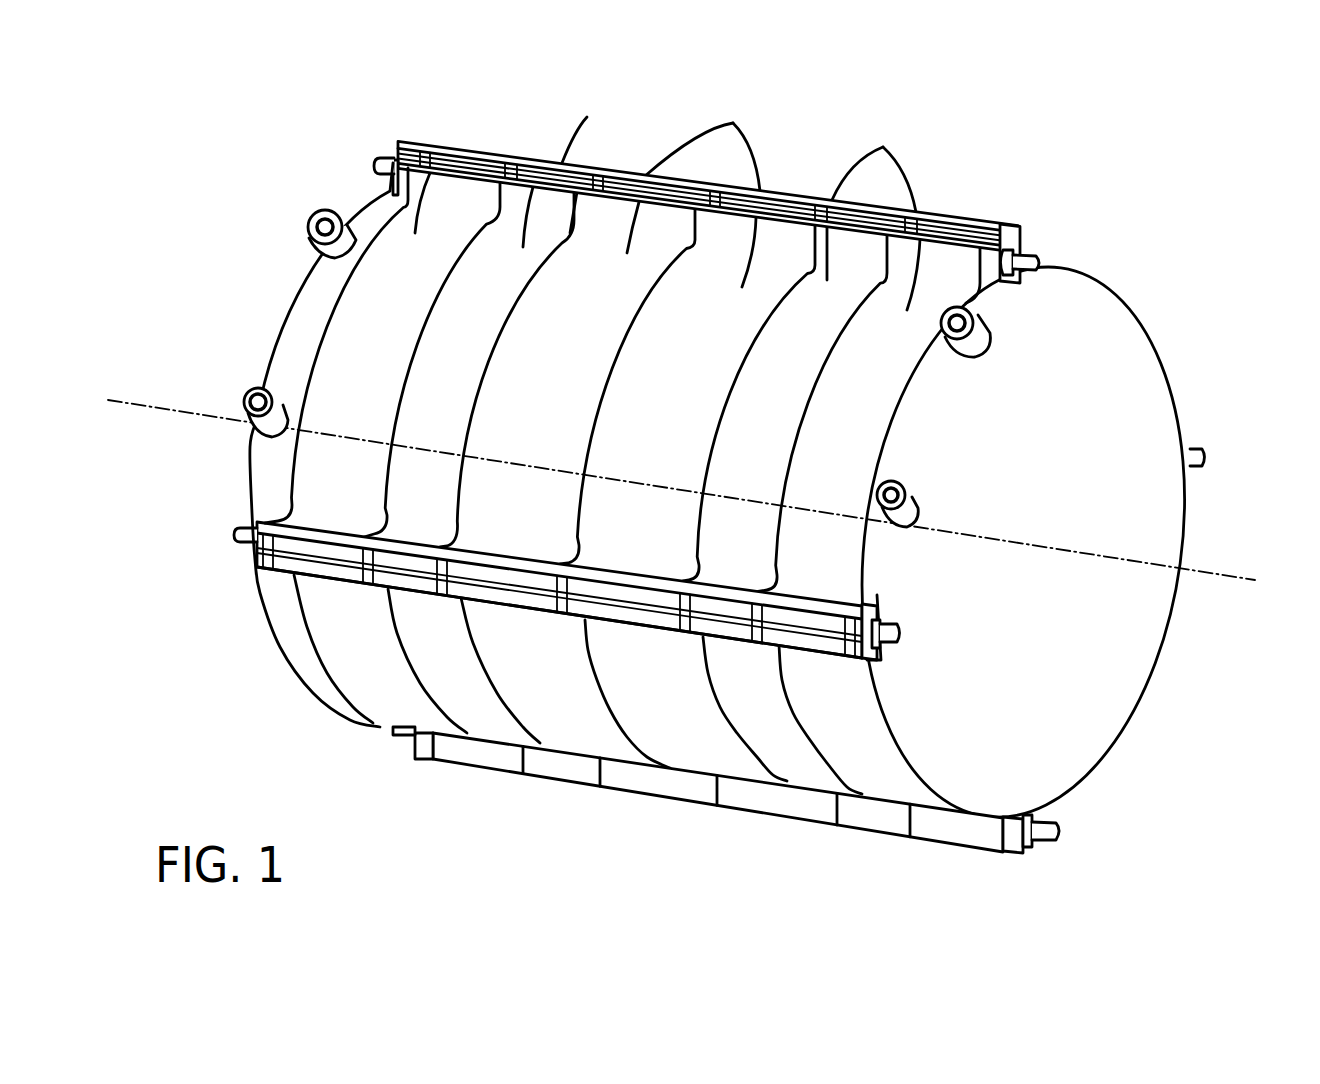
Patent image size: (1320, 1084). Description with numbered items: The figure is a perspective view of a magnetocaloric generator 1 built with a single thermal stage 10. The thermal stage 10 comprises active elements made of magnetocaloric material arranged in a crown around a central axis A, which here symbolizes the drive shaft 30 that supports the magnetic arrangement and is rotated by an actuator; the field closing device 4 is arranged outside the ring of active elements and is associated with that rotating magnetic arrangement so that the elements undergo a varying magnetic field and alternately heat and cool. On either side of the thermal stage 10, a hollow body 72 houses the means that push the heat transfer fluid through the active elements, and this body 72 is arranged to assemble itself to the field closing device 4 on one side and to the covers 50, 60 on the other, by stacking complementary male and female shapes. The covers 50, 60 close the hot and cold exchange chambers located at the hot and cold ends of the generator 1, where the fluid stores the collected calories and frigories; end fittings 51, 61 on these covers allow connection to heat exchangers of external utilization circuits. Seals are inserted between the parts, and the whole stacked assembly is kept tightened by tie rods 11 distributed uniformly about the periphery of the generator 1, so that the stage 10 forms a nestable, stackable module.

The magnetocaloric generator 1 is at (689, 501).
The field closing device 4 is at (663, 440).
The hollow body 72 is at (452, 148).
The cover 50 is at (313, 310).
The end fitting 51 is at (257, 427).
The cover 60 is at (1133, 387).
The end fitting 61 is at (977, 336).
The tie rods 11 is at (1042, 262).
The thermal stage 10 is at (753, 863).
The drive shaft 30 is at (1215, 570).